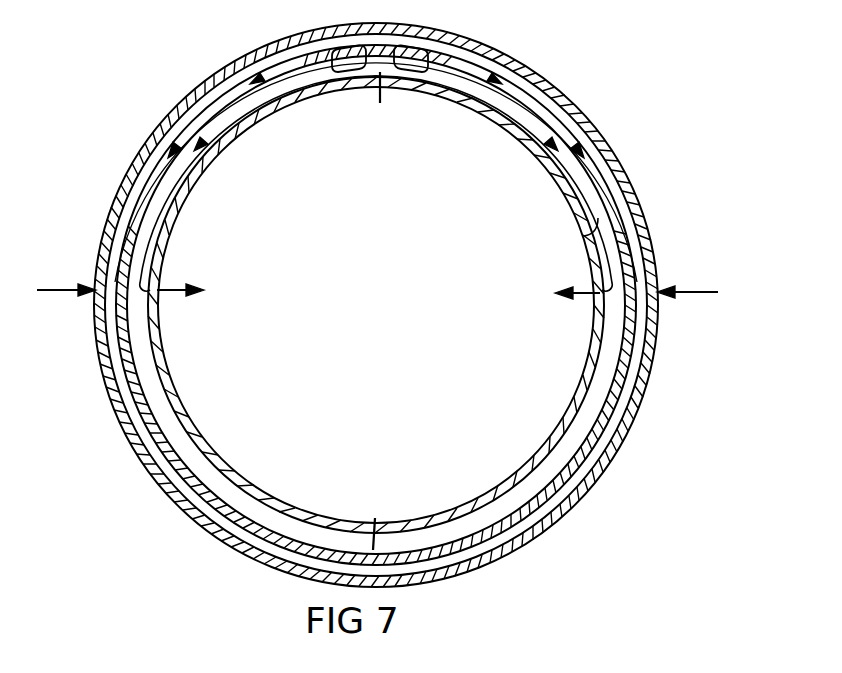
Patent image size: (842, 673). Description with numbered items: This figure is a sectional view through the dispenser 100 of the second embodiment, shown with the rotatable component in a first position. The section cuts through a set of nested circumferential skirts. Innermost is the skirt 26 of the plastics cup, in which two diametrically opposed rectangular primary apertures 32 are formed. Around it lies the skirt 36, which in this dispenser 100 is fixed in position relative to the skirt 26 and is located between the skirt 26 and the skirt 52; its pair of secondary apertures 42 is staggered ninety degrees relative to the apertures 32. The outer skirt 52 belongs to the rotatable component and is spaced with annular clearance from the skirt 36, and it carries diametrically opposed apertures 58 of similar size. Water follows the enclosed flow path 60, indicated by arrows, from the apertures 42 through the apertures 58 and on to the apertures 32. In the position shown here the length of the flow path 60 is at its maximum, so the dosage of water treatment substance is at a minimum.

The dispenser 100 is at (660, 128).
The skirt 26 is at (190, 430).
The primary apertures 32 is at (160, 312).
The skirt 36 is at (138, 420).
The secondary apertures 42 is at (379, 90).
The skirt 52 is at (105, 368).
The apertures 58 is at (92, 308).
The water flow path 60 is at (333, 54).